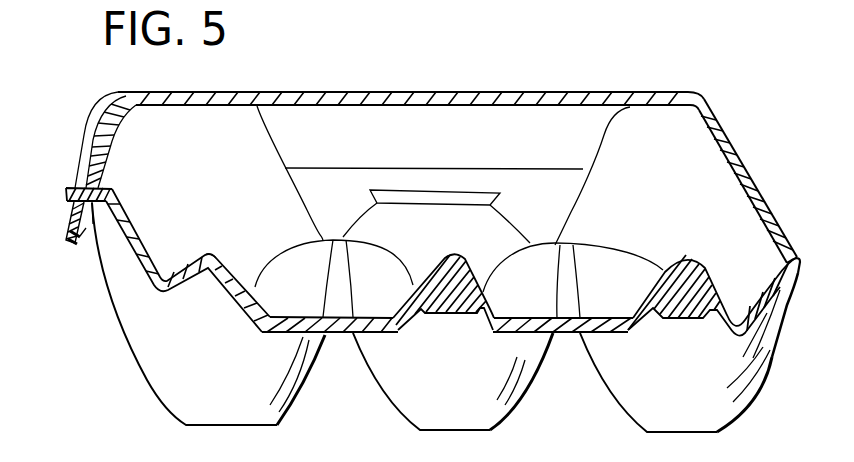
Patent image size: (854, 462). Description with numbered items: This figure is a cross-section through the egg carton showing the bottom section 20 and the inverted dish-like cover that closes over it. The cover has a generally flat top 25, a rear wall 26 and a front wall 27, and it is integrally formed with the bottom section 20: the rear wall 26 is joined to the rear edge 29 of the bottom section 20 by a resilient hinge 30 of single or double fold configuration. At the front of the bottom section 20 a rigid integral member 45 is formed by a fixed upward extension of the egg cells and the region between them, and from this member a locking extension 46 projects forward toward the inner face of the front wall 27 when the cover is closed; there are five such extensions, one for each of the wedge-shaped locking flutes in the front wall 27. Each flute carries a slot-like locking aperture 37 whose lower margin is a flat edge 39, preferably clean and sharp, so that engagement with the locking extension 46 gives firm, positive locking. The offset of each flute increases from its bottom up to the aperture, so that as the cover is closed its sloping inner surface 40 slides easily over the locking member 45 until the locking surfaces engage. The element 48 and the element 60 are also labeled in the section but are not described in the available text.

The bottom section 20 is at (138, 365).
The flat top 25 is at (383, 95).
The rear wall 26 is at (727, 133).
The front wall 27 is at (107, 101).
The rear edge 29 is at (795, 293).
The resilient hinge 30 is at (803, 258).
The locking aperture 37 is at (112, 180).
The flat edge 39 is at (78, 207).
The sloping inner surface 40 is at (88, 259).
The rigid integral member 45 is at (113, 192).
The locking extension 46 is at (66, 191).
The rear wall bend 48 is at (143, 233).
The lid inner surface 60 is at (487, 118).